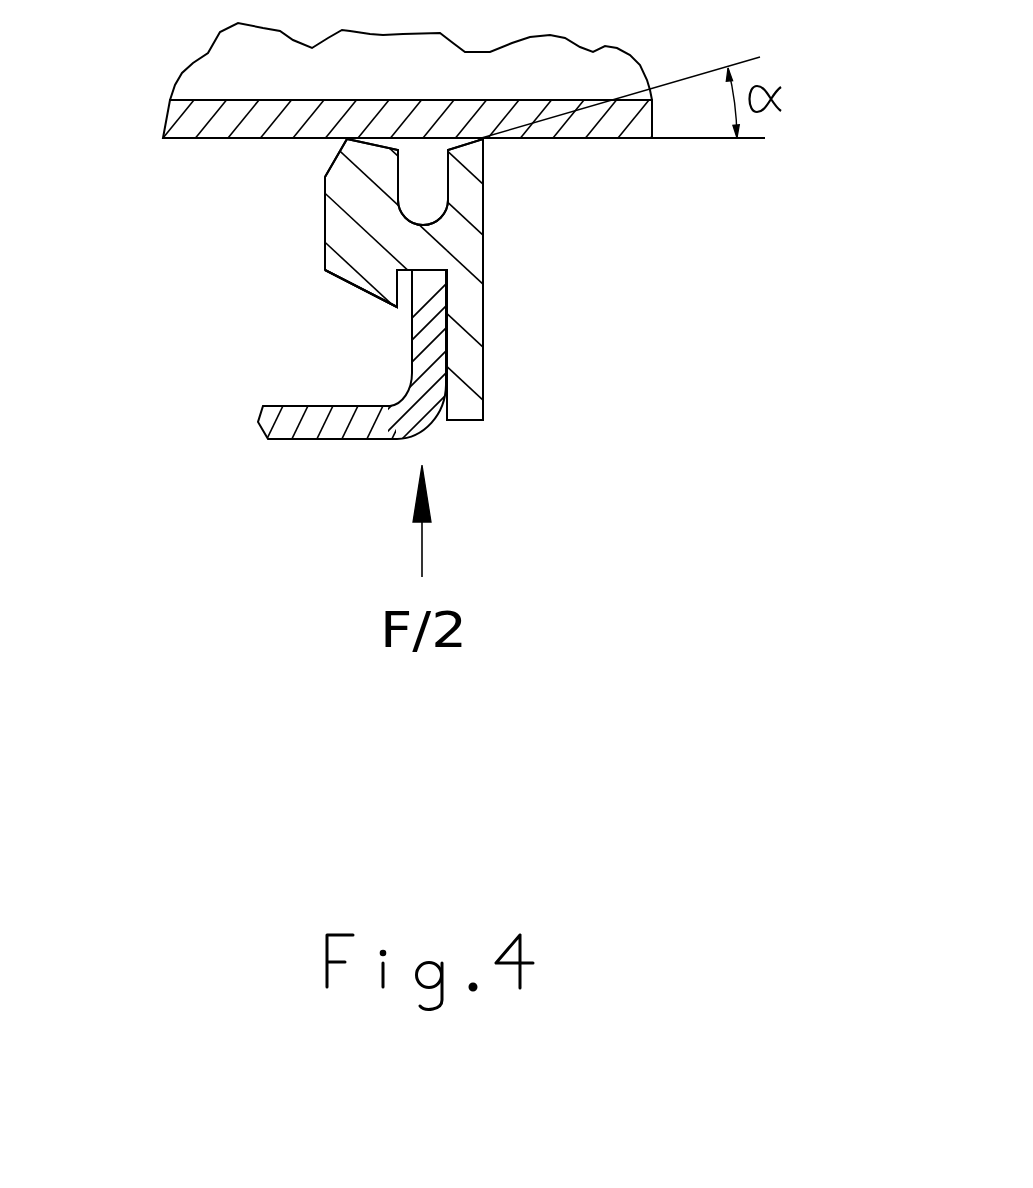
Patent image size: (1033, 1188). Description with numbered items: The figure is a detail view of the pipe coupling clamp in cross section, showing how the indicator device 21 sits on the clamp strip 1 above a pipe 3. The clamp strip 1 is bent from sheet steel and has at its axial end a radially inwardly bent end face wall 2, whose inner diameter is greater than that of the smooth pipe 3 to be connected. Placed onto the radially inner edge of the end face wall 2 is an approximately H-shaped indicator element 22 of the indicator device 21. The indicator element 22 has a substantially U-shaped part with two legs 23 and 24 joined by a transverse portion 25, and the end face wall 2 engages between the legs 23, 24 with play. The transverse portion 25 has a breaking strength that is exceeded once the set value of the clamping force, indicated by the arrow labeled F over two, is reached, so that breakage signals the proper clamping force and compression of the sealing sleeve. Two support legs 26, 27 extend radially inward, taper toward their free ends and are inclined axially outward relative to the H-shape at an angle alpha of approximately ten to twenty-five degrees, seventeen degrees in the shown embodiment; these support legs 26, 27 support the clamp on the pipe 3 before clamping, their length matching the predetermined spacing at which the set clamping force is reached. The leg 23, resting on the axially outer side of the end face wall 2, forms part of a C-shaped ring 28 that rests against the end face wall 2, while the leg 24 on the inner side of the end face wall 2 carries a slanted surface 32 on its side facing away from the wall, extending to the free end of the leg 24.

The clamp strip 1 is at (328, 401).
The end face wall 2 is at (428, 337).
The pipe 3 is at (188, 123).
The indicator device 21 is at (406, 270).
The indicator element 22 is at (486, 282).
The leg 23 is at (470, 309).
The leg 24 is at (373, 268).
The transverse portion 25 is at (411, 246).
The support leg 26 is at (467, 195).
The support leg 27 is at (353, 182).
The C-shaped ring 28 is at (465, 422).
The slanted surface 32 is at (358, 281).